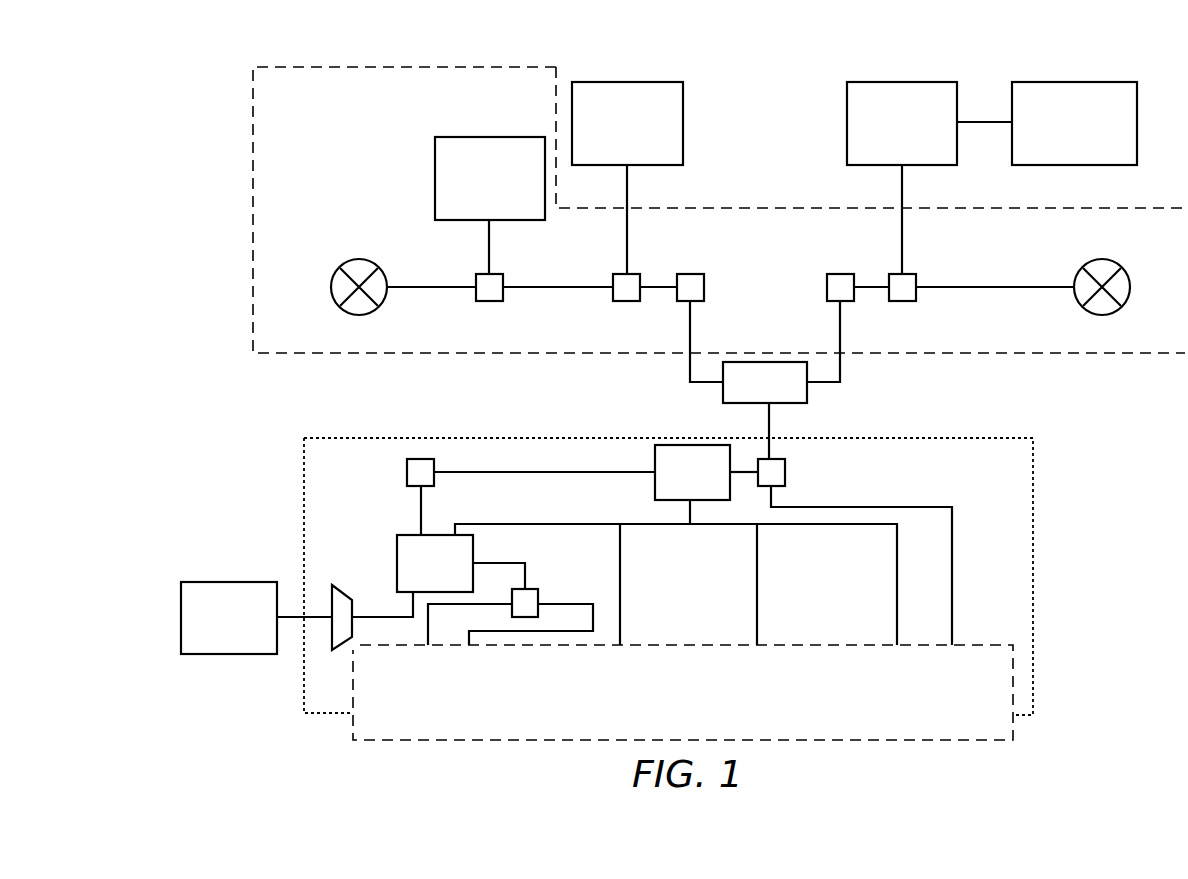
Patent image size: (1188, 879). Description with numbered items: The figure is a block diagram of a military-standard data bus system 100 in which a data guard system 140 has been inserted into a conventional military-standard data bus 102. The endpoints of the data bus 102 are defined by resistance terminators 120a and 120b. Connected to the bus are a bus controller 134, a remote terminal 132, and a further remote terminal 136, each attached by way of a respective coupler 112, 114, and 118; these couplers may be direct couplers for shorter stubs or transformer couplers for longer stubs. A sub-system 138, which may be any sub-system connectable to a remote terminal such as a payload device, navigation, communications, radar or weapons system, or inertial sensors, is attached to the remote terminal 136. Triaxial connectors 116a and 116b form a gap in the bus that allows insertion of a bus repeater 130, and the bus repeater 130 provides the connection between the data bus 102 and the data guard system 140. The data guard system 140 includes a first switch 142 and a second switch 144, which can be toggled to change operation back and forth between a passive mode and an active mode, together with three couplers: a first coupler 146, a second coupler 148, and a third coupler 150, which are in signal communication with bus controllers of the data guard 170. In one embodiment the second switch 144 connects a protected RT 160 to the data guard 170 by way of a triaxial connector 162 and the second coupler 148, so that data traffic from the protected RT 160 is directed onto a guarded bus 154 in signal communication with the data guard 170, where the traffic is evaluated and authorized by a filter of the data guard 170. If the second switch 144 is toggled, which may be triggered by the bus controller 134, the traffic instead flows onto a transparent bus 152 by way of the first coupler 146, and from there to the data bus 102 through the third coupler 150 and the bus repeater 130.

The MIL-STD-1553 data bus system 100 is at (772, 51).
The MIL-STD-1553 data bus 102 is at (719, 210).
The coupler 112 is at (504, 299).
The coupler 114 is at (612, 293).
The triaxial connector 116a is at (688, 273).
The triaxial connector 116b is at (843, 273).
The coupler 118 is at (912, 273).
The resistance terminator 120a is at (331, 284).
The resistance terminator 120b is at (1130, 297).
The bus repeater 130 is at (722, 393).
The remote terminal 132 is at (630, 81).
The bus controller 134 is at (434, 145).
The remote terminal 136 is at (923, 81).
The sub-system 138 is at (1080, 81).
The data guard system 140 is at (668, 576).
The first switch 142 is at (654, 483).
The second switch 144 is at (396, 556).
The first coupler 146 is at (406, 471).
The second coupler 148 is at (539, 607).
The third coupler 150 is at (786, 468).
The transparent bus 152 is at (568, 476).
The guarded bus 154 is at (491, 562).
The protected RT 160 is at (203, 581).
The triaxial connector 162 is at (335, 585).
The data guard 170 is at (683, 692).